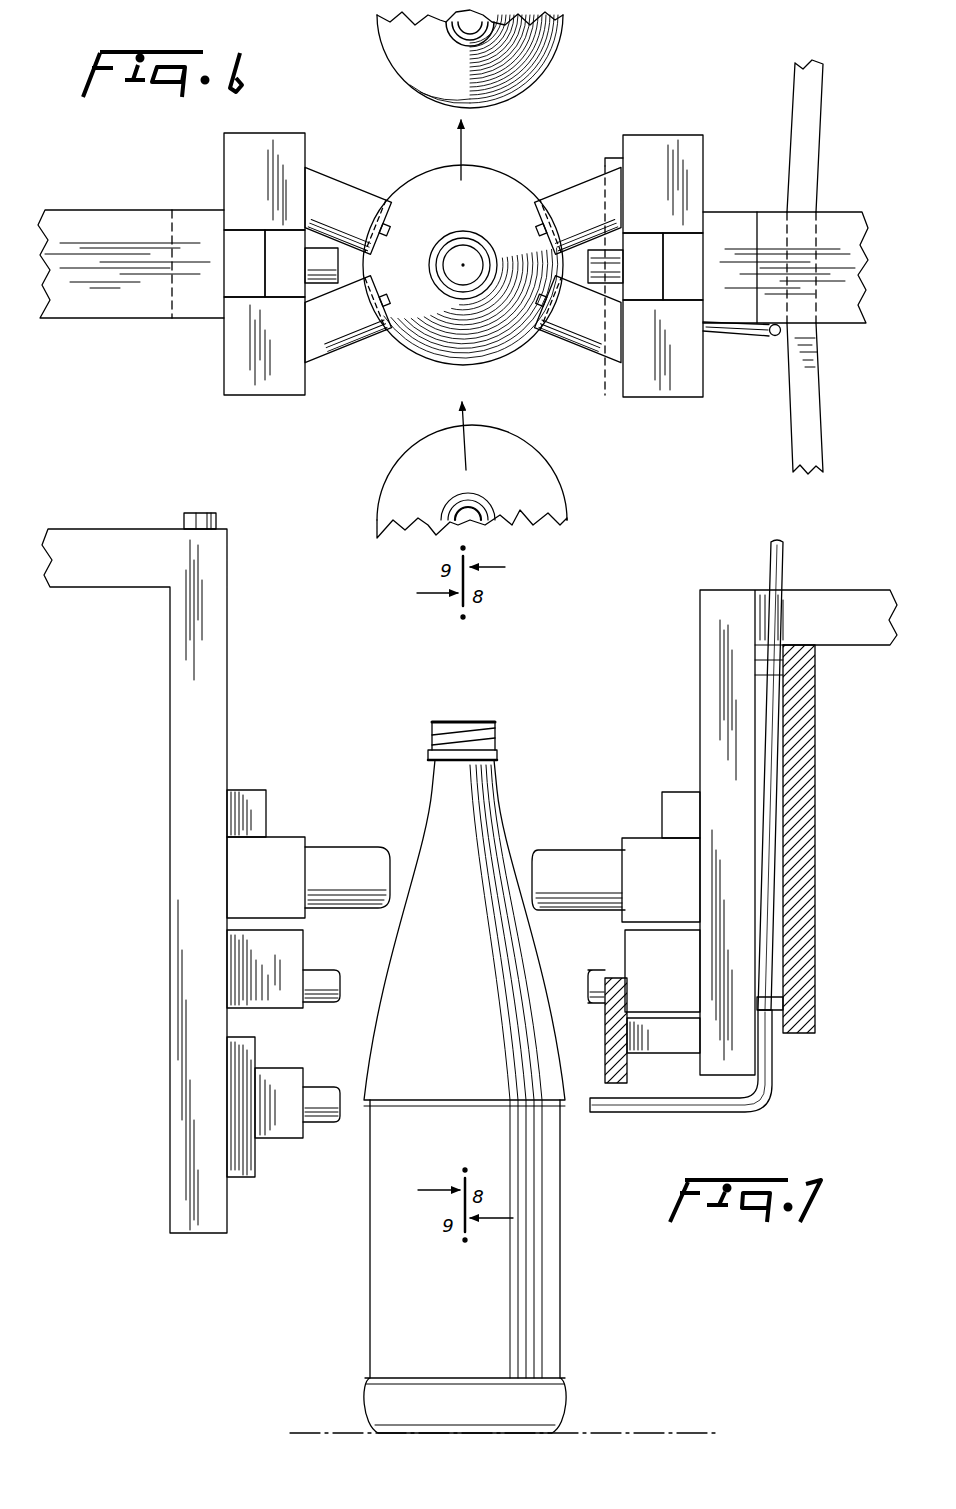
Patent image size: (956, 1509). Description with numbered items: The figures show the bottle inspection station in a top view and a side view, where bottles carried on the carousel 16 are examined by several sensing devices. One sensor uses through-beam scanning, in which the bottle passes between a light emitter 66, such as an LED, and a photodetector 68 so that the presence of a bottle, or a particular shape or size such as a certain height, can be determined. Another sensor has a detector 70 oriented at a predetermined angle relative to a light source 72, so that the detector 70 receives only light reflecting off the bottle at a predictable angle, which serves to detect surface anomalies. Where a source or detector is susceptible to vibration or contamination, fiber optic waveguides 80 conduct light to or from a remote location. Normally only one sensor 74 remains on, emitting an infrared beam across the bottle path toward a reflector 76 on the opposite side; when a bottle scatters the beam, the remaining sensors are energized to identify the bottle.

In FIG. 6, the carousel 16 is at (797, 116).
In FIG. 7, the carousel 16 is at (805, 848).
In FIG. 6, the light emitter 66 is at (233, 248).
In FIG. 7, the light emitter 66 is at (258, 795).
In FIG. 6, the photodetector 68 is at (677, 245).
In FIG. 7, the photodetector 68 is at (673, 800).
In FIG. 6, the detector 70 is at (563, 203).
In FIG. 7, the detector 70 is at (340, 855).
In FIG. 6, the light source 72 is at (330, 182).
In FIG. 7, the light source 72 is at (573, 865).
In FIG. 6, the sensor 74 is at (322, 262).
In FIG. 7, the sensor 74 is at (318, 975).
In FIG. 6, the reflector 76 is at (605, 366).
In FIG. 7, the reflector 76 is at (613, 1082).
In FIG. 6, the fiber optic waveguides 80 is at (750, 335).
In FIG. 7, the fiber optic waveguides 80 is at (782, 563).